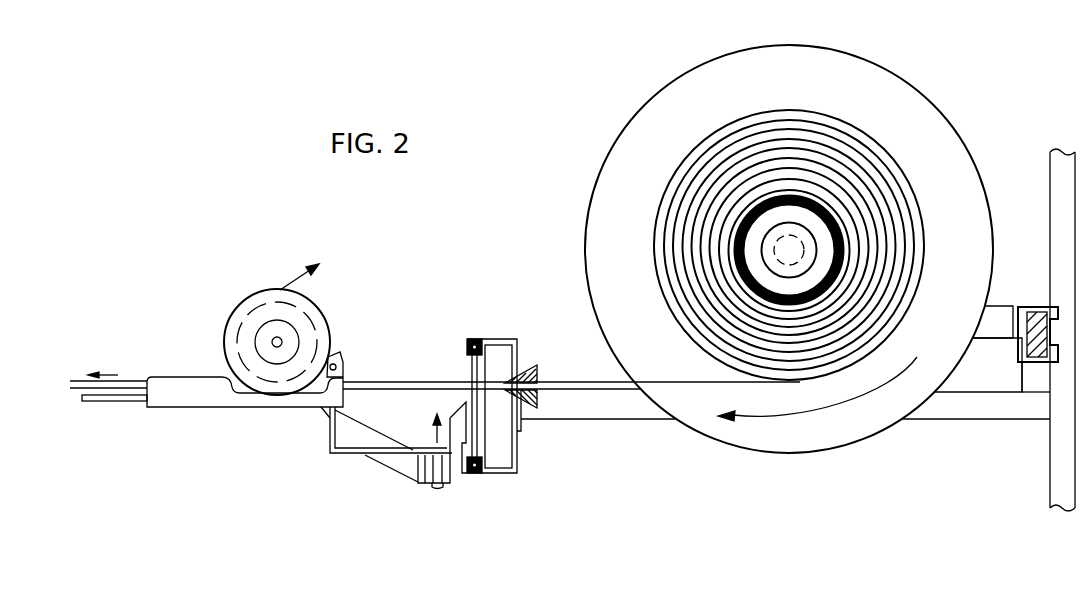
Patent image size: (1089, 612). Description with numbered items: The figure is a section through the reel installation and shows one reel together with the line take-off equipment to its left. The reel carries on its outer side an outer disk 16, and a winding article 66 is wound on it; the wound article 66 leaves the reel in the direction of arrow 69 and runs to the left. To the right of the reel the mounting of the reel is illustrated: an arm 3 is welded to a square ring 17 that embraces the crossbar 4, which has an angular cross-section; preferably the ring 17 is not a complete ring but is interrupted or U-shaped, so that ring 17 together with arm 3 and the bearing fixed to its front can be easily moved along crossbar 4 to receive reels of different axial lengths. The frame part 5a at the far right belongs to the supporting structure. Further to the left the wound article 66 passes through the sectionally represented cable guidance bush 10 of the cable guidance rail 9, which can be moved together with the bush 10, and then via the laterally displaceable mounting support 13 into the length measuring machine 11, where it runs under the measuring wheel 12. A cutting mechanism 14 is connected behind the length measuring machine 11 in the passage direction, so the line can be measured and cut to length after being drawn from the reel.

The outer disk 16 is at (903, 98).
The winding article 66 is at (703, 193).
The arrow 69 is at (887, 414).
The frame wall 5a is at (1060, 183).
The arm 3 is at (998, 313).
The crossbar 4 is at (1025, 344).
The ring 17 is at (1037, 304).
The cable guidance rail 9 is at (492, 343).
The cable guidance bush 10 is at (527, 365).
The length measuring machine 11 is at (193, 385).
The roller 12 is at (323, 329).
The mounting support 13 is at (363, 440).
The cutting mechanism 14 is at (113, 400).